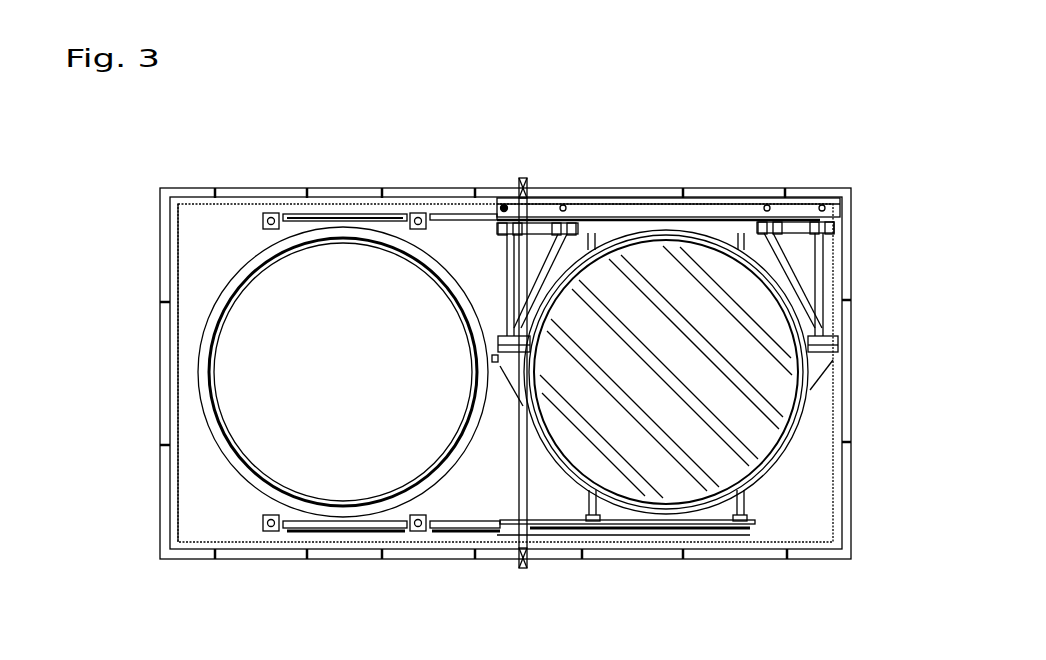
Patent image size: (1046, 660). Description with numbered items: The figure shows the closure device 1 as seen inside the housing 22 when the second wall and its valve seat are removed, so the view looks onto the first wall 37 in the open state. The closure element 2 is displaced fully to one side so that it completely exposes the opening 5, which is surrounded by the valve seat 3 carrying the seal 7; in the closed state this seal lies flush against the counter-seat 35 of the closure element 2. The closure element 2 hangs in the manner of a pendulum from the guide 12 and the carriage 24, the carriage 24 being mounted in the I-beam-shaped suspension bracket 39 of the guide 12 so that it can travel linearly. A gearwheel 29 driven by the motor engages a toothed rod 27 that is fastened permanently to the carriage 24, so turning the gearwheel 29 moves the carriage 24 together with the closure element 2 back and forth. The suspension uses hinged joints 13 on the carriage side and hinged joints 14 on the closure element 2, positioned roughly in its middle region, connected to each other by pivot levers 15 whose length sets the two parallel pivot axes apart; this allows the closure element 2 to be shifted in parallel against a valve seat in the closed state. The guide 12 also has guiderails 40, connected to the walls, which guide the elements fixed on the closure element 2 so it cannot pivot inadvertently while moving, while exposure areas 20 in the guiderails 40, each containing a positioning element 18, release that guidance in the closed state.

The closure device 1 is at (660, 118).
The closure element 2 is at (697, 297).
The valve seat 3 is at (428, 255).
The opening 5 is at (333, 272).
The seal 7 is at (372, 242).
The guide 12 is at (298, 214).
The hinged joint 13 is at (538, 200).
The hinged joint 14 is at (830, 340).
The pivot lever 15 is at (510, 262).
The positioning element 18 is at (271, 212).
The exposure area 20 is at (266, 210).
The housing 22 is at (808, 503).
The carriage 24 is at (612, 212).
The toothed rod 27 is at (545, 224).
The gearwheel 29 is at (529, 190).
The counter-seat 35 is at (803, 413).
The first wall 37 is at (196, 486).
The suspension bracket 39 is at (192, 208).
The guiderail 40 is at (318, 221).